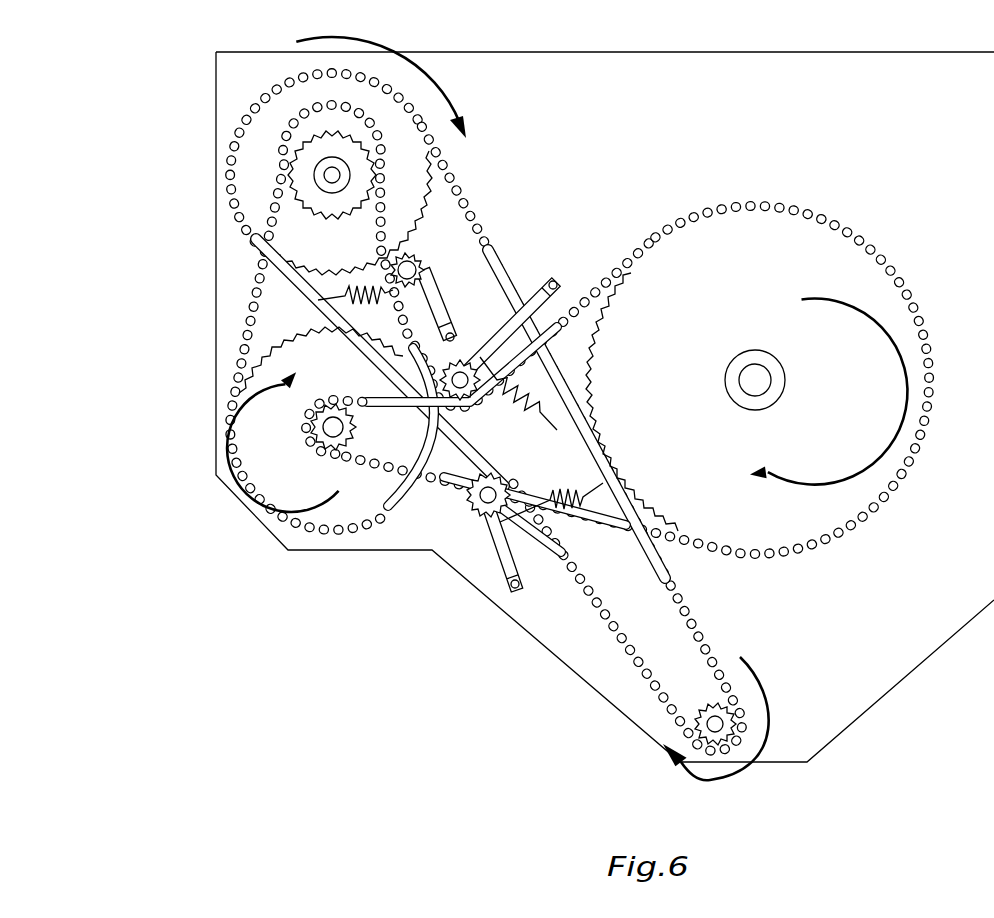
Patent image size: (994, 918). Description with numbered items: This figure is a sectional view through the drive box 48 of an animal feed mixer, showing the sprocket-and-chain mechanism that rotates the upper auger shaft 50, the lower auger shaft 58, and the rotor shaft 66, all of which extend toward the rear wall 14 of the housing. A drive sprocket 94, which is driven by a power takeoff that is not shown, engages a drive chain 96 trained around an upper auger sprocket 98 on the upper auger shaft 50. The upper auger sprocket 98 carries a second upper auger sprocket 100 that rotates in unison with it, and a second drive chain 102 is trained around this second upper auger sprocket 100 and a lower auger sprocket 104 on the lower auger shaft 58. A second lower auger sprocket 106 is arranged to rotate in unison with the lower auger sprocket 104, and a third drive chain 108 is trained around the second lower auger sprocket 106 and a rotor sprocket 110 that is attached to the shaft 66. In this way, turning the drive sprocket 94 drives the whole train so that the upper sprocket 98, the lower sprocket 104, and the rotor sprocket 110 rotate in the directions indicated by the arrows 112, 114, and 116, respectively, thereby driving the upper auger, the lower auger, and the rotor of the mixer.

The rear wall 14 is at (690, 210).
The drive box 48 is at (683, 83).
The upper auger shaft 50 is at (345, 171).
The lower auger shaft 58 is at (330, 437).
The shaft 66 is at (743, 363).
The drive sprocket 94 is at (719, 723).
The drive chain 96 is at (695, 634).
The upper auger sprocket 98 is at (252, 167).
The second upper auger sprocket 100 is at (302, 167).
The second drive chain 102 is at (250, 308).
The lower auger sprocket 104 is at (257, 407).
The second lower auger sprocket 106 is at (285, 505).
The third drive chain 108 is at (383, 462).
The rotor sprocket 110 is at (855, 284).
The arrow 112 is at (837, 438).
The arrow 114 is at (352, 35).
The arrow 116 is at (262, 438).